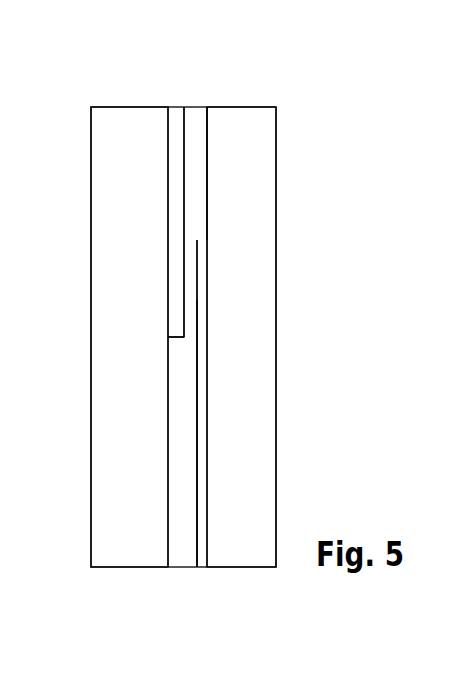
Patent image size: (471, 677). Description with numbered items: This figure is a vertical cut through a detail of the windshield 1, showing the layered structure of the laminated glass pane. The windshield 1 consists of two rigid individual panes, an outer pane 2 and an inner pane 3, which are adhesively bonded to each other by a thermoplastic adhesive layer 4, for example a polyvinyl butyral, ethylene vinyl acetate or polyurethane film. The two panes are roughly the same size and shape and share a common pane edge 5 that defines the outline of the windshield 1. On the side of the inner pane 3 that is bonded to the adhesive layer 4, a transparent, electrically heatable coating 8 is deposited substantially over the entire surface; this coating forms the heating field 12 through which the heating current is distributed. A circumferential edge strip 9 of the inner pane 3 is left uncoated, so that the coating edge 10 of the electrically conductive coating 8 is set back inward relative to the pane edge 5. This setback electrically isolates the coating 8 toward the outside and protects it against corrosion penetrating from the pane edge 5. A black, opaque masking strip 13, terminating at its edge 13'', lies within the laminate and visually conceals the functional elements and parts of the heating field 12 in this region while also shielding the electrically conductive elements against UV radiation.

The windshield 1 is at (291, 125).
The outer pane 2 is at (128, 538).
The inner pane 3 is at (238, 543).
The thermoplastic adhesive layer 4 is at (178, 543).
The pane edge 5 is at (215, 567).
The electrically heatable coating 8 is at (200, 378).
The edge strip 9 is at (207, 162).
The coating edge 10 is at (200, 239).
The heating field 12 is at (200, 378).
The masking strip 13 is at (177, 186).
The edge of masking strip 13'' is at (106, 357).